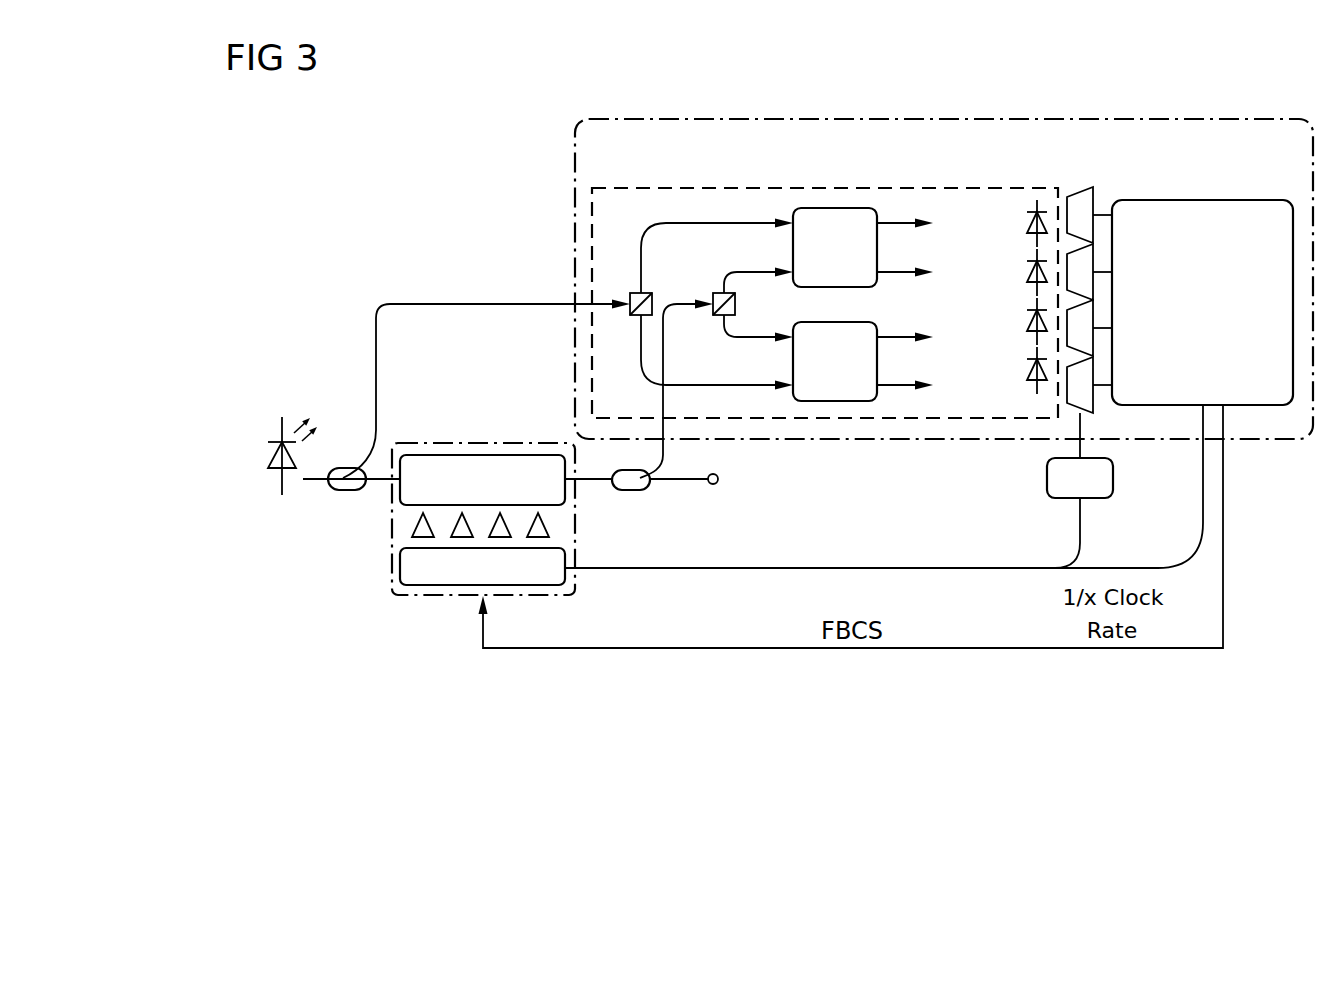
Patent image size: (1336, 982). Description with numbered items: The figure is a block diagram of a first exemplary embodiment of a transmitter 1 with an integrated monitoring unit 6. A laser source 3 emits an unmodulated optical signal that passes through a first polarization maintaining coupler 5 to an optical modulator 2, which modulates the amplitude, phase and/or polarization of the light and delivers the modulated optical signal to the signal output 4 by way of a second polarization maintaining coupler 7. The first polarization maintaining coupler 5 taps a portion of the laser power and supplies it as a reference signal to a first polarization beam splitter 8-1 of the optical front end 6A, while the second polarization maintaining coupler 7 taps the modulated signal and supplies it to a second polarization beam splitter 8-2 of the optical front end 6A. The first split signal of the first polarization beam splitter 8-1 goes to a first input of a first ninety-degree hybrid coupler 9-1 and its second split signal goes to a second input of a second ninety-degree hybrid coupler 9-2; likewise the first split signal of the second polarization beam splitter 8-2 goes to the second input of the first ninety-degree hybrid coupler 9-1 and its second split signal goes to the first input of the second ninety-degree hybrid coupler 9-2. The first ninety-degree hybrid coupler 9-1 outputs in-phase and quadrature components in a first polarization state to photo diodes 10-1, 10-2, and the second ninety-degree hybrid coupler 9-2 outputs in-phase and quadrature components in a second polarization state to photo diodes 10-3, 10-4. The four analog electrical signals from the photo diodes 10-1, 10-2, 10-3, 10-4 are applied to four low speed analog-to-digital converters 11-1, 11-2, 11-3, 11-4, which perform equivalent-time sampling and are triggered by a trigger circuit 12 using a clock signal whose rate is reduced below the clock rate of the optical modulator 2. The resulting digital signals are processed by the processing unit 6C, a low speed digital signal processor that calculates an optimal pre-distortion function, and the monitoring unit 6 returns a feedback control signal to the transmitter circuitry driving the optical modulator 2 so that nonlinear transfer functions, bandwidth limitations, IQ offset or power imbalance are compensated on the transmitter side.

The transmitter 1 is at (1256, 99).
The optical modulator 2 is at (490, 455).
The laser source 3 is at (267, 458).
The signal output 4 is at (713, 484).
The first polarization maintaining coupler 5 is at (347, 493).
The monitoring unit 6 is at (1007, 118).
The optical front end 6A is at (682, 186).
The processing unit 6C is at (1190, 200).
The second polarization maintaining coupler 7 is at (632, 490).
The first polarization beam splitter 8-1 is at (632, 330).
The second polarization beam splitter 8-2 is at (717, 330).
The first 90-degree hybrid coupler 9-1 is at (835, 208).
The second 90-degree hybrid coupler 9-2 is at (835, 402).
The photo diode 10-1 is at (1026, 222).
The photo diode 10-2 is at (1026, 271).
The photo diode 10-3 is at (1026, 320).
The photo diode 10-4 is at (1026, 369).
The low speed analog-to-digital converter 11-1 is at (1093, 233).
The low speed analog-to-digital converter 11-2 is at (1093, 290).
The low speed analog-to-digital converter 11-3 is at (1093, 346).
The low speed analog-to-digital converter 11-4 is at (1112, 385).
The trigger circuit 12 is at (1113, 477).